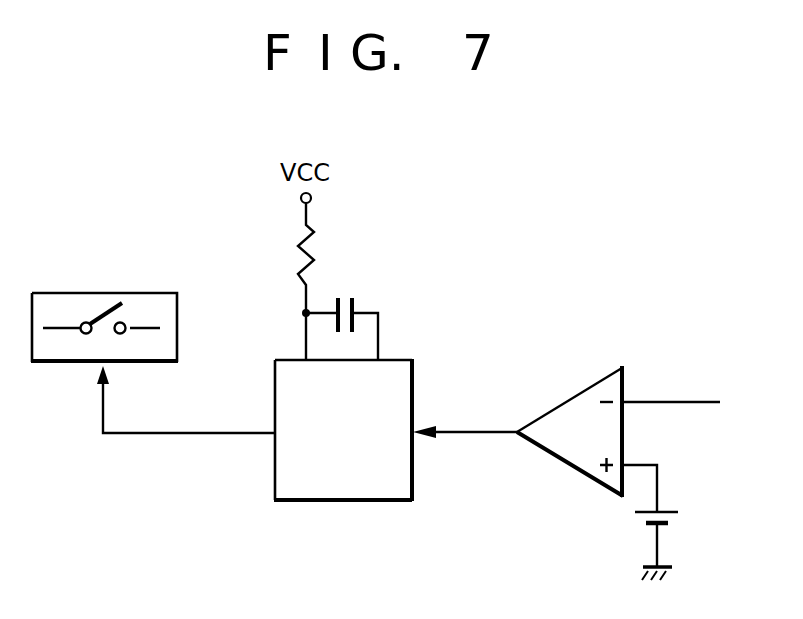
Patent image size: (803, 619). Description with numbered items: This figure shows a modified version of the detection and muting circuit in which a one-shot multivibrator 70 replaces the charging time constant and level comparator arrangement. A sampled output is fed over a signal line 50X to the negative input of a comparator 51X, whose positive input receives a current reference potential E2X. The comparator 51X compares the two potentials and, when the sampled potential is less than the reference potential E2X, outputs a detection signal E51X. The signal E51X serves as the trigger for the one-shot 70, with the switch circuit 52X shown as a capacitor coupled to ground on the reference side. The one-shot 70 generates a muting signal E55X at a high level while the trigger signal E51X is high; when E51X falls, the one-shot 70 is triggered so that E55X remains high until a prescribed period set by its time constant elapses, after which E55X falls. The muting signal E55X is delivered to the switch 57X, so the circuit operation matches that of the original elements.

The one-shot multivibrator 70 is at (382, 493).
The muting signal E55X is at (182, 433).
The switch 57X is at (53, 352).
The detection signal E51X is at (472, 432).
The comparator 51X is at (564, 416).
The signal line 50X is at (682, 402).
The current reference potential E2X is at (670, 488).
The switch circuit 52X is at (675, 522).